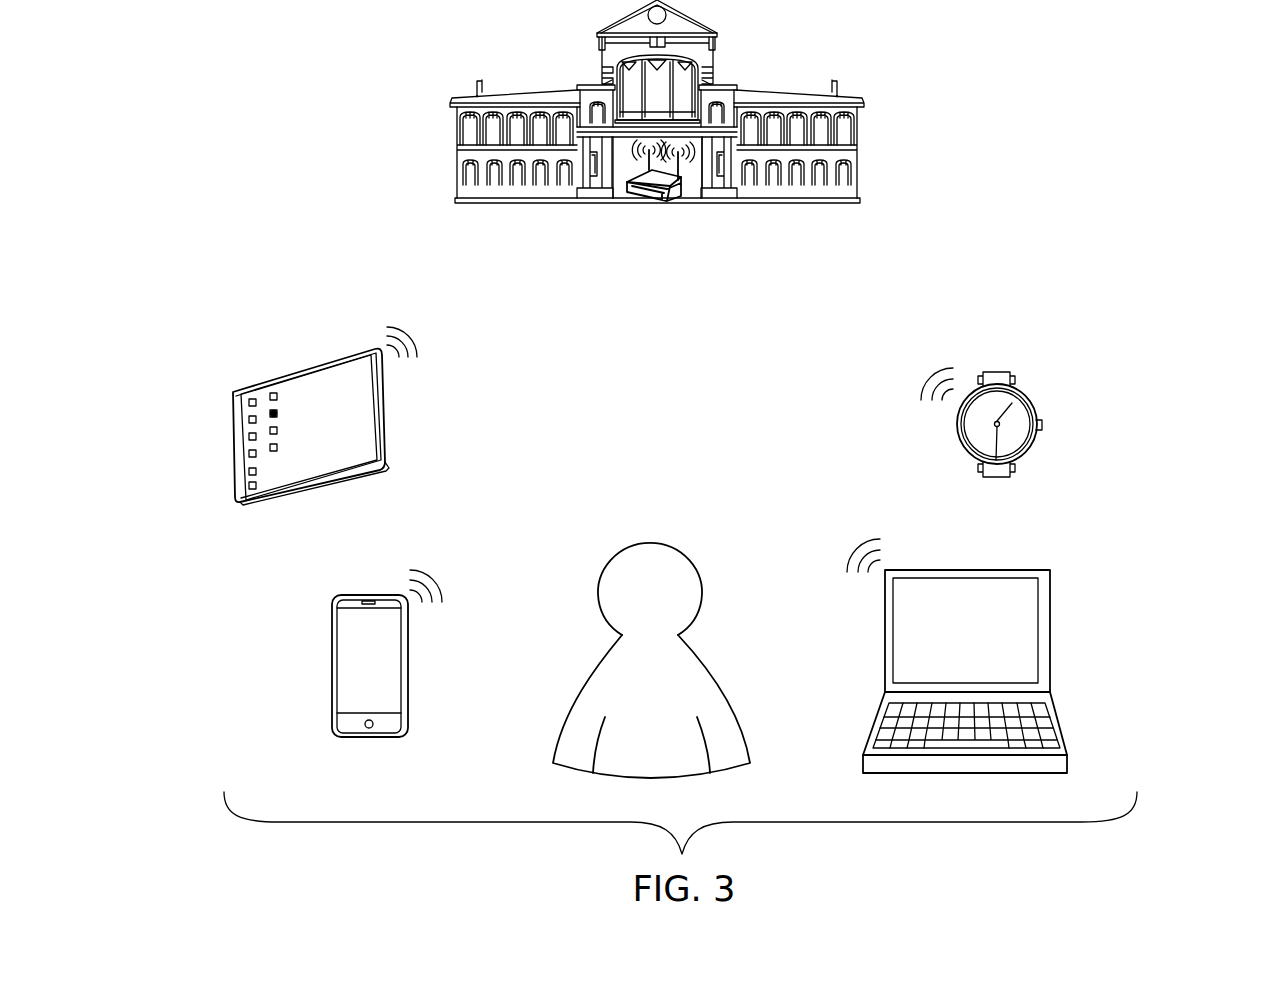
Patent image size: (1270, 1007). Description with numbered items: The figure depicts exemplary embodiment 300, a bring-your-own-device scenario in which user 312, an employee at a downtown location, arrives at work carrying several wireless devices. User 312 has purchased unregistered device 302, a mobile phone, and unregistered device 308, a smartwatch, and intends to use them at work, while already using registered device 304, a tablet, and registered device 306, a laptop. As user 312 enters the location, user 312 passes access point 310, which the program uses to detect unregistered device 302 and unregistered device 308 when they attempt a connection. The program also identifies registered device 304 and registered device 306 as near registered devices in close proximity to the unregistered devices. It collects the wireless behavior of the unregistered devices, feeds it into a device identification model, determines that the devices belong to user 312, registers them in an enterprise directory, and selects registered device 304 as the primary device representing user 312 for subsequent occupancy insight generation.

The exemplary embodiment 300 is at (278, 115).
The unregistered device 302 is at (330, 637).
The registered device 304 is at (1055, 710).
The registered device 306 is at (283, 373).
The unregistered device 308 is at (1033, 403).
The access point 310 is at (676, 196).
The user 312 is at (647, 543).